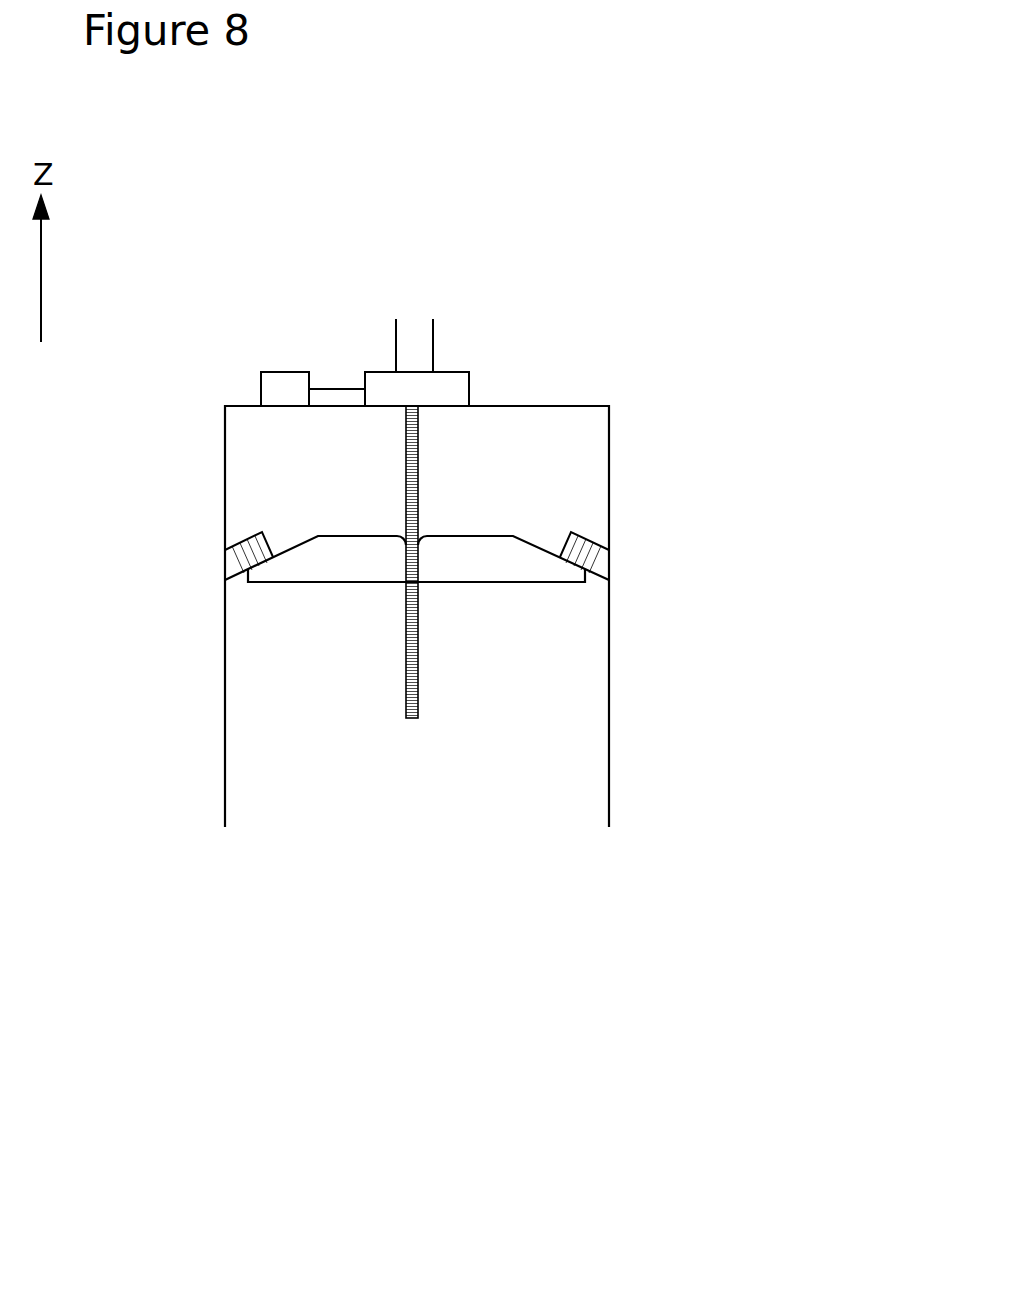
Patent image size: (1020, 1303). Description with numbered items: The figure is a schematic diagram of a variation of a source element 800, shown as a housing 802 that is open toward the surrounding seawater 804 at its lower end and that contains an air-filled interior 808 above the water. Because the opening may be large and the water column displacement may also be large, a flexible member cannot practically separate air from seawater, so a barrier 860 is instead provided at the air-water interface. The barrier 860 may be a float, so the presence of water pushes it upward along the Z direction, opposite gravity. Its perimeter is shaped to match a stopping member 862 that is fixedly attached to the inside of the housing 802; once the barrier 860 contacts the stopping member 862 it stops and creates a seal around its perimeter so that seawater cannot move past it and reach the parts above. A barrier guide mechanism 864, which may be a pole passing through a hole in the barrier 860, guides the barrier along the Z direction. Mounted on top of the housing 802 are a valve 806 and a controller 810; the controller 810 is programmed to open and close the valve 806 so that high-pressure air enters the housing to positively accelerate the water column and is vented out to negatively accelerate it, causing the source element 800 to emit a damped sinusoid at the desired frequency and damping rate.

The source element 800 is at (430, 158).
The housing 802 is at (609, 463).
The external fluid environment 804 is at (752, 686).
The valve 806 is at (469, 388).
The internal chamber 808 is at (503, 493).
The controller 810 is at (282, 372).
The barrier 860 is at (531, 563).
The stopping member 862 is at (246, 538).
The barrier guide mechanism 864 is at (406, 468).